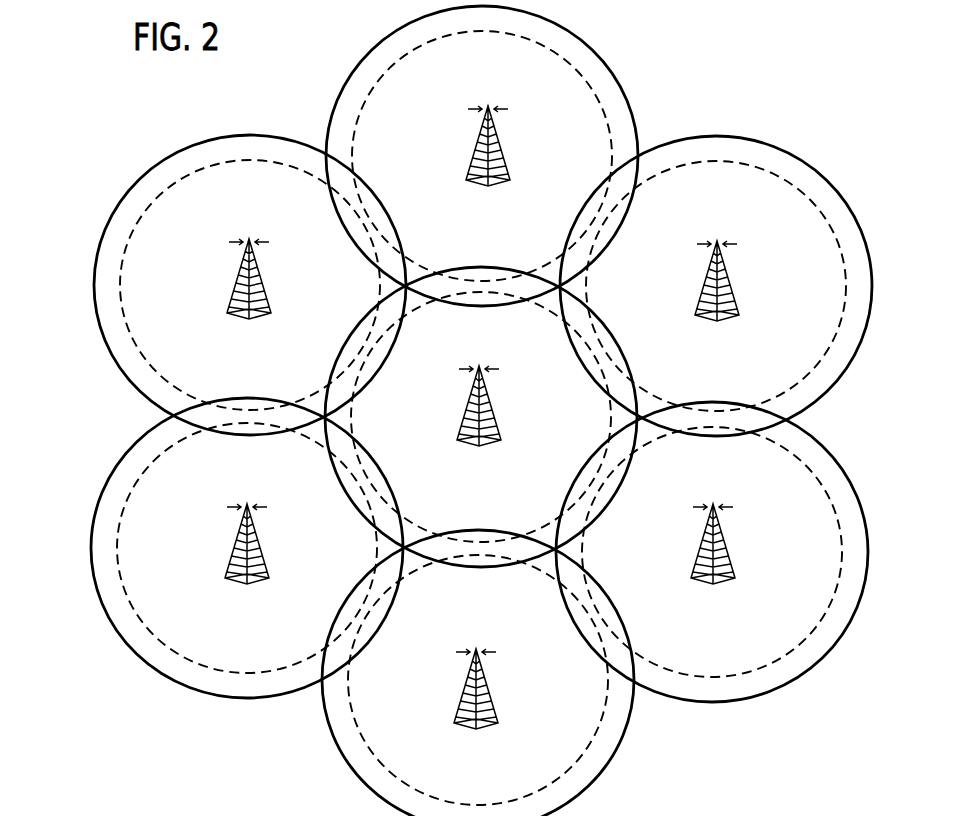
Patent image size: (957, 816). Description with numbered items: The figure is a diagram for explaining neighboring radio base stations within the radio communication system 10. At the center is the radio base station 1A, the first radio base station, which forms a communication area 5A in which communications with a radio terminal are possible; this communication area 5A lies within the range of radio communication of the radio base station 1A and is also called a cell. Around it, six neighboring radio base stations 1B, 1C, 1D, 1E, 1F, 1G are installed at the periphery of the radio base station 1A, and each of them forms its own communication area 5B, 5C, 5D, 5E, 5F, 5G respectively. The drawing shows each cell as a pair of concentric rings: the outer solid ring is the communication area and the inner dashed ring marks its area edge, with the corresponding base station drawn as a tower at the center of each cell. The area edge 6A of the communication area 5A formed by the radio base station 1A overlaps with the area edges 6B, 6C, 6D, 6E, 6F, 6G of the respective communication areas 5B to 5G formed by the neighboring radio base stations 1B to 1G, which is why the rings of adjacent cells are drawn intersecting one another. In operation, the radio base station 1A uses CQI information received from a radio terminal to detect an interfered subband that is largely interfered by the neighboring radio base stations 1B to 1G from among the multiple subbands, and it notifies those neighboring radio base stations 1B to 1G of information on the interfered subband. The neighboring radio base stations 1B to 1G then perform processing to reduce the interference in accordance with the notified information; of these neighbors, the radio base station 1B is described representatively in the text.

The radio communication system 10 is at (794, 91).
The radio base station 1A is at (502, 398).
The neighboring radio base station 1B is at (736, 272).
The neighboring radio base station 1C is at (732, 534).
The neighboring radio base station 1D is at (496, 678).
The neighboring radio base station 1E is at (265, 534).
The neighboring radio base station 1F is at (268, 270).
The neighboring radio base station 1G is at (508, 136).
The communication area 5A is at (624, 344).
The communication area 5B is at (868, 232).
The communication area 5C is at (867, 525).
The communication area 5D is at (614, 748).
The communication area 5E is at (90, 535).
The communication area 5F is at (130, 188).
The communication area 5G is at (600, 58).
The area edge 6A is at (597, 320).
The area edge 6B is at (802, 176).
The area edge 6C is at (830, 468).
The area edge 6D is at (358, 755).
The area edge 6E is at (127, 472).
The area edge 6F is at (202, 153).
The area edge 6G is at (628, 112).